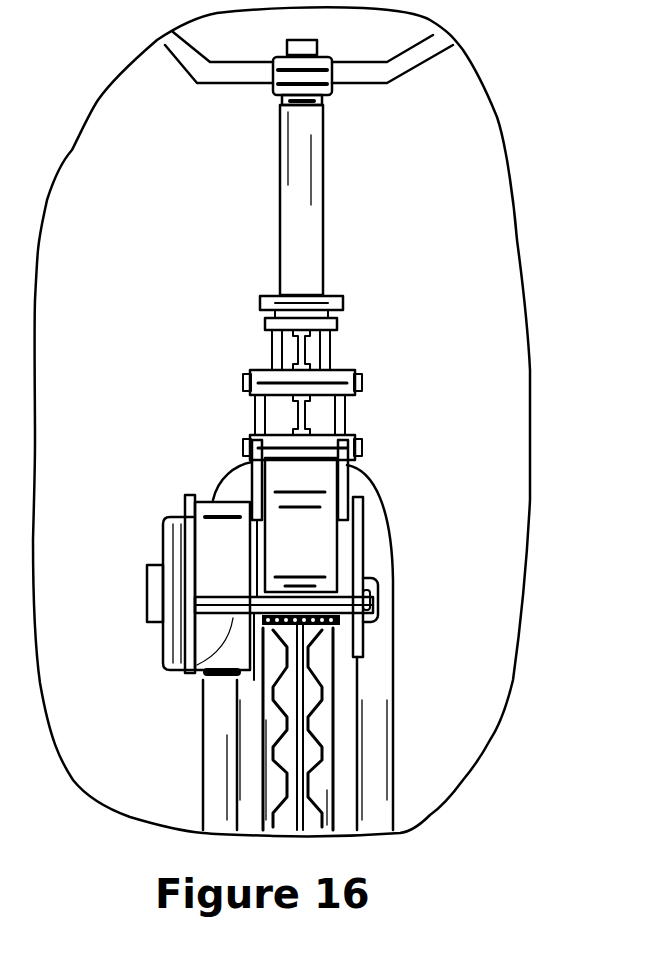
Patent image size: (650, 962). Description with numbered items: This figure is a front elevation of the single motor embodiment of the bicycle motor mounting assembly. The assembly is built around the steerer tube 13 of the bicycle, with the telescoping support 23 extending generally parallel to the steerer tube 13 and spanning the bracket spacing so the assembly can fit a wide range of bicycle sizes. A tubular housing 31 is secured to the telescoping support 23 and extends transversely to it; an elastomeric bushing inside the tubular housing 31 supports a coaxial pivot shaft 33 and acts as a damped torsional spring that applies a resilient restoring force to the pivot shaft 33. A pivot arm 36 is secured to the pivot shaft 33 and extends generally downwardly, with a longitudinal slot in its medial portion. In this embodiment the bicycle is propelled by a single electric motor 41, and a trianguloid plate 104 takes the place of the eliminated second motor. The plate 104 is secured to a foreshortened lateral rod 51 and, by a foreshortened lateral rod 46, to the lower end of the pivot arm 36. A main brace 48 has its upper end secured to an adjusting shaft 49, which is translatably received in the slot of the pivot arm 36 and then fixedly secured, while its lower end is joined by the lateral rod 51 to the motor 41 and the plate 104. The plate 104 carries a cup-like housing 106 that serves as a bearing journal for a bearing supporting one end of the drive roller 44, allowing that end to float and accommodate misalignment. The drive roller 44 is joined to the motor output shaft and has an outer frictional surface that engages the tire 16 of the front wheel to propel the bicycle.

The steerer tube 13 is at (272, 345).
The tire 16 is at (283, 753).
The telescoping support 23 is at (324, 342).
The tubular housing 31 is at (363, 397).
The pivot shaft 33 is at (360, 374).
The pivot arm 36 is at (368, 483).
The electric motor 41 is at (213, 548).
The drive roller 44 is at (345, 658).
The first lateral support rod 46 is at (208, 493).
The main brace 48 is at (293, 482).
The adjusting shaft 49 is at (357, 448).
The second lateral rod 51 is at (178, 677).
The trianguloid plate 104 is at (363, 558).
The cup-like housing 106 is at (373, 603).